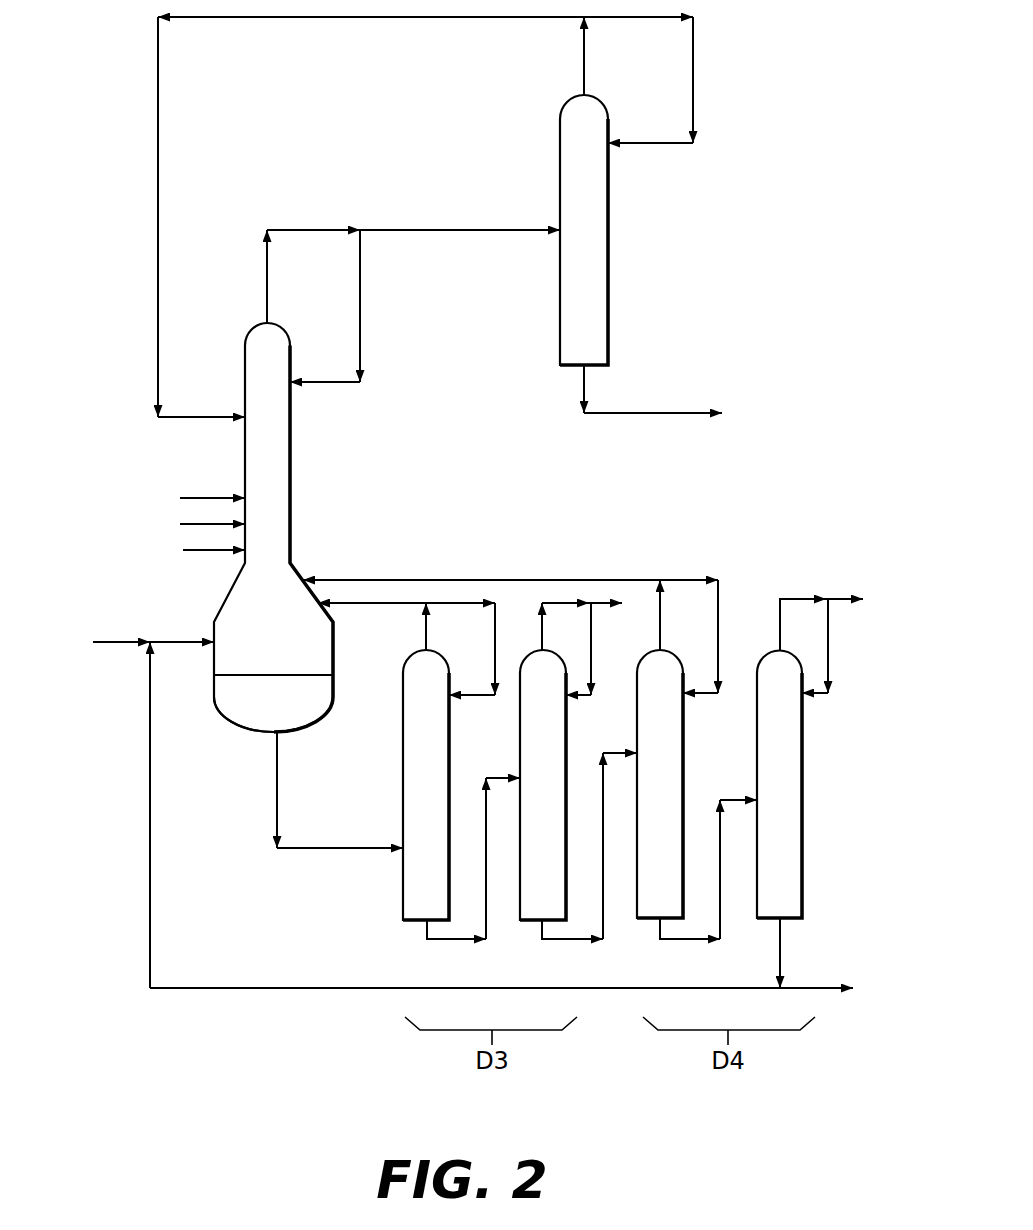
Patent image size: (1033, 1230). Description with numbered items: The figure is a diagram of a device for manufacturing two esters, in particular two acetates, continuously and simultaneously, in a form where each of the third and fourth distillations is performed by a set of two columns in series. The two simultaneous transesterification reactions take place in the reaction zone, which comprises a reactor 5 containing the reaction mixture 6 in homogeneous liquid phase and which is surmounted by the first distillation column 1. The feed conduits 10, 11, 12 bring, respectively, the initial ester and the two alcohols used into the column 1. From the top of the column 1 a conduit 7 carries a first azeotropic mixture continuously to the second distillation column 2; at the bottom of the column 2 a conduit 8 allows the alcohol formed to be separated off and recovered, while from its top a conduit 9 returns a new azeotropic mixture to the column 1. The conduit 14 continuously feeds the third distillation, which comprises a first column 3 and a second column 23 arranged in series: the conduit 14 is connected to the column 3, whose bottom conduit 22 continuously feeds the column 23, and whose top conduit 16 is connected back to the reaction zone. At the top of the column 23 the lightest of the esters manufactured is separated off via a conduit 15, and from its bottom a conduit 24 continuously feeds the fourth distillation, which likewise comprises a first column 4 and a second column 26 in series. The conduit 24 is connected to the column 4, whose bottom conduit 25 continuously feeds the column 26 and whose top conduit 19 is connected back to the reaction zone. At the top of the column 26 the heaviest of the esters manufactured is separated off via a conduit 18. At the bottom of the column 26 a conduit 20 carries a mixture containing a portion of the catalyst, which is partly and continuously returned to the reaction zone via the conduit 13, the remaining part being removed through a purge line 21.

The distillation (D1) column 1 is at (290, 432).
The distillation (D2) column 2 is at (560, 307).
The first column of distillation (D3) 3 is at (403, 767).
The first column of distillation (D4) 4 is at (637, 707).
The reactor 5 is at (407, 603).
The reaction mixture 6 is at (258, 726).
The conduit 7 is at (478, 229).
The conduit 8 is at (635, 414).
The conduit 9 is at (462, 18).
The feed conduit 10 is at (205, 551).
The feed conduit 11 is at (195, 524).
The feed conduit 12 is at (205, 498).
The conduit 13 is at (115, 642).
The conduit 14 is at (315, 850).
The conduit 15 is at (603, 604).
The conduit 16 is at (333, 655).
The conduit 18 is at (840, 598).
The conduit 19 is at (622, 578).
The conduit 20 is at (620, 990).
The purge line 21 is at (807, 985).
The conduit 22 is at (488, 913).
The second column of distillation (D3) 23 is at (520, 707).
The conduit 24 is at (605, 913).
The conduit 25 is at (722, 913).
The second column of distillation (D4) 26 is at (757, 707).